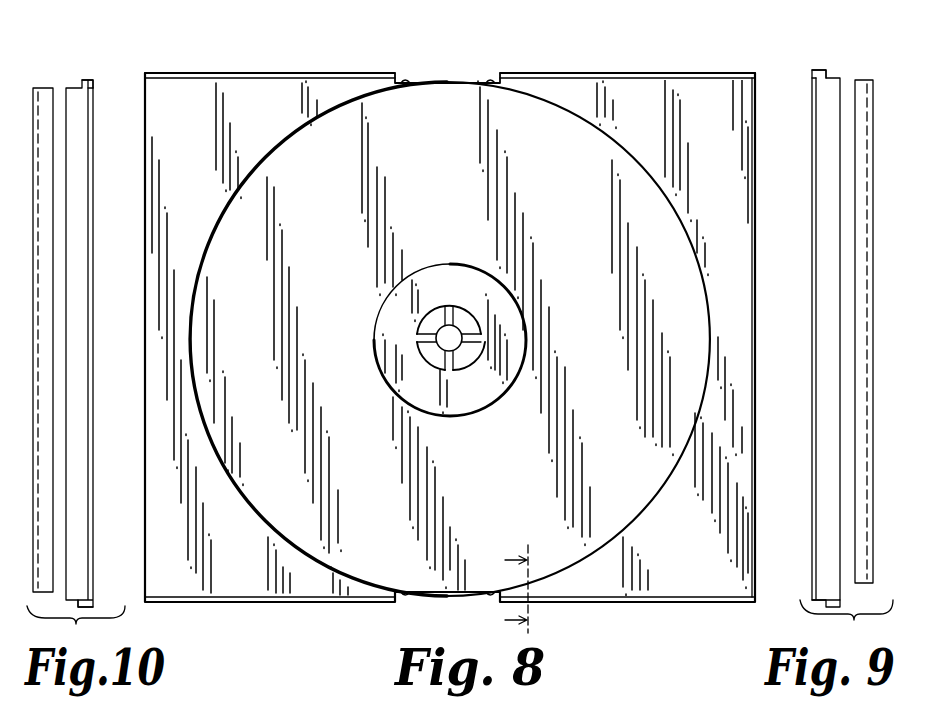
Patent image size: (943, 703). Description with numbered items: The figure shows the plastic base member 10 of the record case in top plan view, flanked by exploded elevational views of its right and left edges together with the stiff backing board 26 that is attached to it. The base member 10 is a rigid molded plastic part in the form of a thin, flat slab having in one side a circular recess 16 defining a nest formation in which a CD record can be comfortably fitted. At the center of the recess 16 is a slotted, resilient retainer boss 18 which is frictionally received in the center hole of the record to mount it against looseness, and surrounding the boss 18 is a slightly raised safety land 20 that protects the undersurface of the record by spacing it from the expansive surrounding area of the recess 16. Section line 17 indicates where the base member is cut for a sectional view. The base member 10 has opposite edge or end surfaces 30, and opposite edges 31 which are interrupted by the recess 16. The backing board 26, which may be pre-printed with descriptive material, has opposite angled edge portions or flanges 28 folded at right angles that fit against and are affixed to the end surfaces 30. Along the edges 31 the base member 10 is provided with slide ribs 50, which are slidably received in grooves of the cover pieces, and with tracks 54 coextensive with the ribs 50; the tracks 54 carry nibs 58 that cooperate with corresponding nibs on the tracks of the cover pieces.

In FIG. 8, the base member 10 is at (712, 52).
In FIG. 10, the base member 10 is at (109, 412).
In FIG. 9, the base member 10 is at (804, 355).
In FIG. 8, the circular recess 16 is at (450, 340).
In FIG. 8, the section line 17- 17 is at (503, 589).
In FIG. 8, the retainer boss 18 is at (437, 323).
In FIG. 8, the safety land 20 is at (472, 385).
In FIG. 10, the backing board 26 is at (33, 95).
In FIG. 9, the backing board 26 is at (872, 100).
In FIG. 10, the flanges 28 is at (68, 88).
In FIG. 9, the flanges 28 is at (832, 78).
In FIG. 8, the edge surfaces 30 is at (145, 340).
In FIG. 8, the edges 31 is at (341, 65).
In FIG. 8, the slide ribs 50 is at (236, 73).
In FIG. 10, the slide ribs 50 is at (97, 79).
In FIG. 9, the slide ribs 50 is at (818, 72).
In FIG. 10, the tracks 54 is at (78, 92).
In FIG. 9, the tracks 54 is at (832, 83).
In FIG. 8, the nibs 58 is at (408, 80).